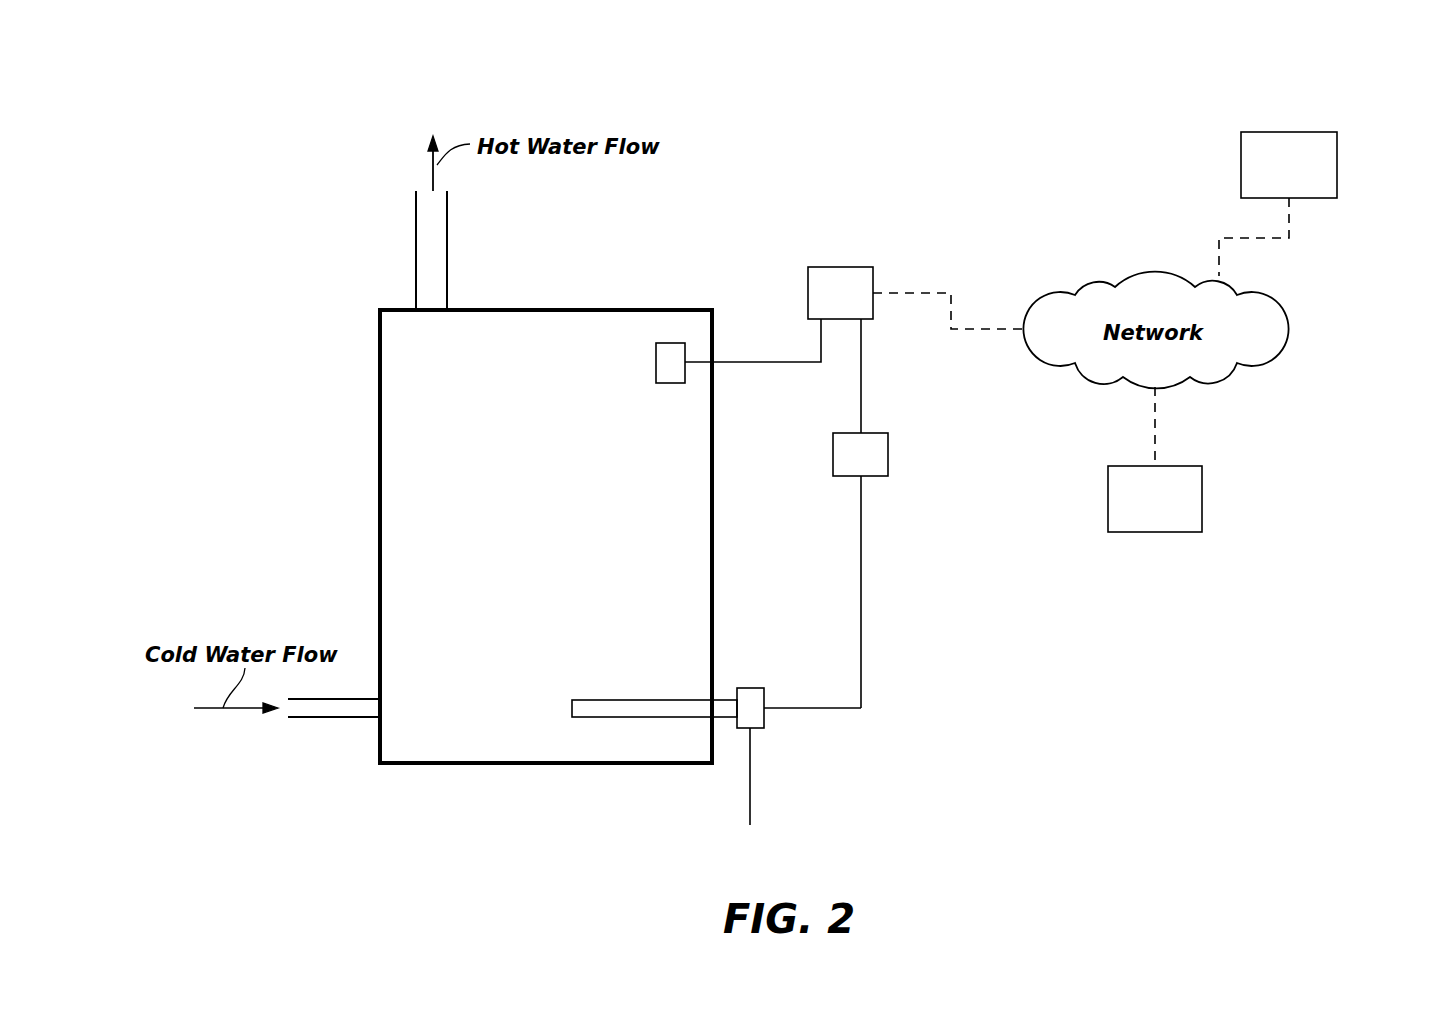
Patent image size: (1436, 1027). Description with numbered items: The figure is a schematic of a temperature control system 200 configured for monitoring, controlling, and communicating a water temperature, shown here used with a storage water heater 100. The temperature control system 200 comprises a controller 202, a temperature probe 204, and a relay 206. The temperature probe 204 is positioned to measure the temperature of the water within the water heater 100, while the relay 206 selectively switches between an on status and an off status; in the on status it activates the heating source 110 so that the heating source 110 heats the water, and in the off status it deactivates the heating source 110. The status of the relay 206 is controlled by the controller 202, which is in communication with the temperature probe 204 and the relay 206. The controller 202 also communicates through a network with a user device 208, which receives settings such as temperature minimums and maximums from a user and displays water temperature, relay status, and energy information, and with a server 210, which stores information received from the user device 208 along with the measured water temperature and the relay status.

The storage water heater 100 is at (377, 488).
The heating source 110 is at (764, 720).
The temperature control system 200 is at (628, 62).
The controller 202 is at (841, 267).
The temperature probe 204 is at (656, 362).
The relay 206 is at (833, 455).
The user device 208 is at (1337, 165).
The server 210 is at (1202, 498).